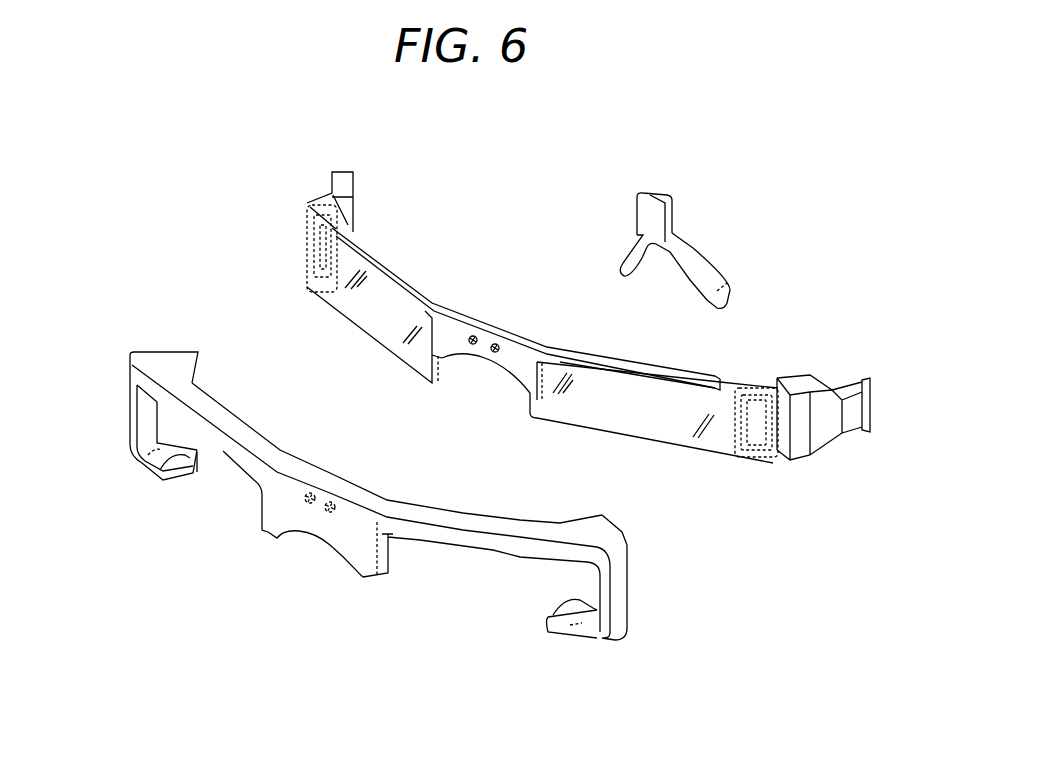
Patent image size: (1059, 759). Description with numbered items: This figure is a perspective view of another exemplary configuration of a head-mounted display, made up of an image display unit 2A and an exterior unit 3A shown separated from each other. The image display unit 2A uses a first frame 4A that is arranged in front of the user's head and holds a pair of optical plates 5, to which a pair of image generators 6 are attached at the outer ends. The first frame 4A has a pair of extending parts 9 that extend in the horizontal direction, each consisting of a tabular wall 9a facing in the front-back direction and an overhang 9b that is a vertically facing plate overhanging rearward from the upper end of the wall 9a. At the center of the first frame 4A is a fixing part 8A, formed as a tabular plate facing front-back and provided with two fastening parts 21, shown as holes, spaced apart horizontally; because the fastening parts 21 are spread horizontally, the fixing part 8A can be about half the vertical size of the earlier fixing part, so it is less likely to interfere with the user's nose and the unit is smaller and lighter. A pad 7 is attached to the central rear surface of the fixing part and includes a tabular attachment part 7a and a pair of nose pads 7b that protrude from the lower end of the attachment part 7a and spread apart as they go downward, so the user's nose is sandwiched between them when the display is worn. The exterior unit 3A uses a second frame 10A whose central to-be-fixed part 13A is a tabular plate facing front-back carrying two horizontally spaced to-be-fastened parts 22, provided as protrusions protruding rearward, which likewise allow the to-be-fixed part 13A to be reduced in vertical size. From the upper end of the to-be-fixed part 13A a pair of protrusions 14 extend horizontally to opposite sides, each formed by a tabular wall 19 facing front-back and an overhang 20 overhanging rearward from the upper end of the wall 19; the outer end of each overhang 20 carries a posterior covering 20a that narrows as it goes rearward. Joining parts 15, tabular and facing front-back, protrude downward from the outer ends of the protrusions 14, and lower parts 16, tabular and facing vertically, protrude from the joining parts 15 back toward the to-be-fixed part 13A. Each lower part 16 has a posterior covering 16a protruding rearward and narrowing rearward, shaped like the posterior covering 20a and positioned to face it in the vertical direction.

The image display unit 2A is at (728, 380).
The exterior unit 3A is at (265, 532).
The first frame 4A is at (578, 355).
The optical plate 5 is at (410, 357).
The image generator 6 is at (330, 192).
The pad 7 is at (671, 220).
The attachment part 7a is at (655, 192).
The nose pad 7b is at (621, 266).
The fixing part 8A is at (508, 346).
The extending part 9 is at (405, 282).
The wall 9a is at (385, 272).
The overhang 9b is at (366, 262).
The second frame 10A is at (415, 497).
The to-be-fixed part 13A is at (364, 580).
The protrusion 14 is at (212, 407).
The joining part 15 is at (128, 416).
The lower part 16 is at (142, 468).
The posterior covering 16a is at (160, 474).
The wall 19 is at (222, 462).
The overhang 20 is at (243, 424).
The posterior covering 20a is at (185, 362).
The fastening part 21 is at (470, 346).
The to-be-fastened part 22 is at (310, 512).